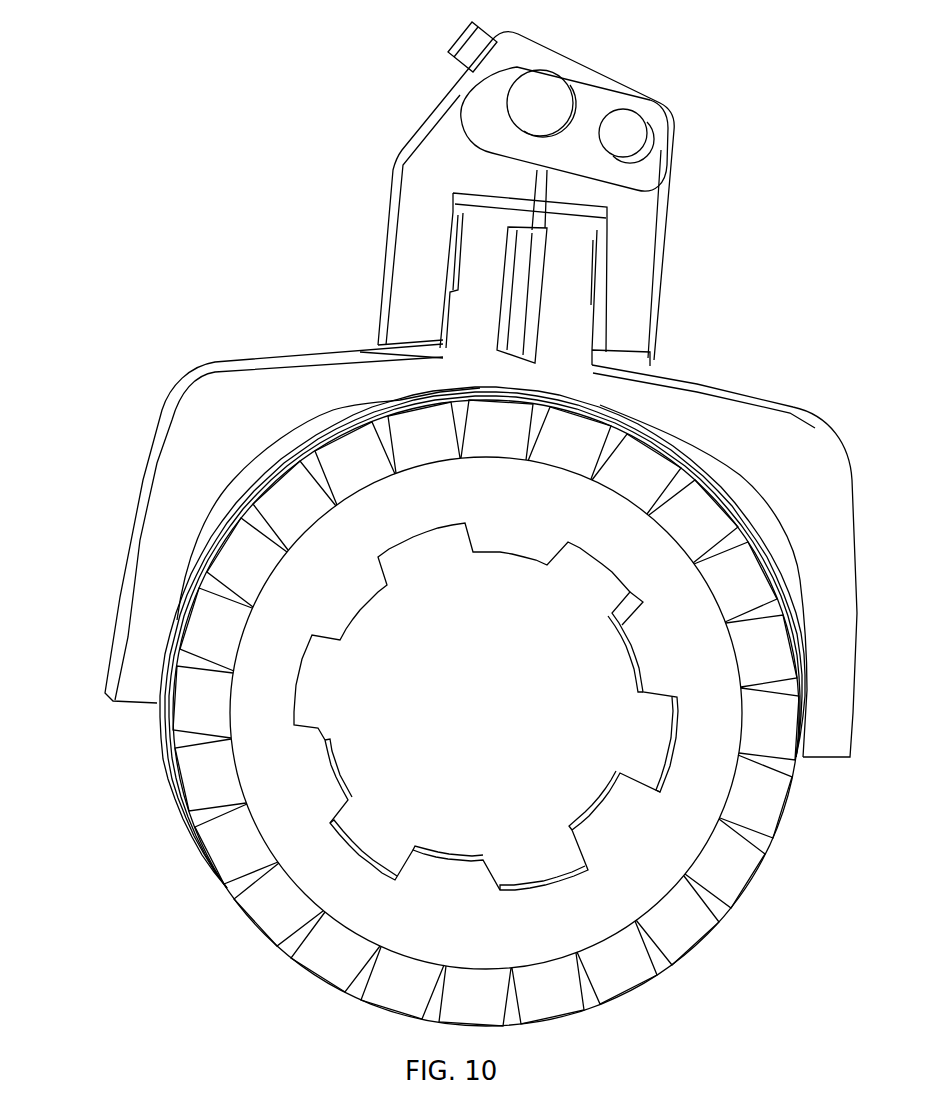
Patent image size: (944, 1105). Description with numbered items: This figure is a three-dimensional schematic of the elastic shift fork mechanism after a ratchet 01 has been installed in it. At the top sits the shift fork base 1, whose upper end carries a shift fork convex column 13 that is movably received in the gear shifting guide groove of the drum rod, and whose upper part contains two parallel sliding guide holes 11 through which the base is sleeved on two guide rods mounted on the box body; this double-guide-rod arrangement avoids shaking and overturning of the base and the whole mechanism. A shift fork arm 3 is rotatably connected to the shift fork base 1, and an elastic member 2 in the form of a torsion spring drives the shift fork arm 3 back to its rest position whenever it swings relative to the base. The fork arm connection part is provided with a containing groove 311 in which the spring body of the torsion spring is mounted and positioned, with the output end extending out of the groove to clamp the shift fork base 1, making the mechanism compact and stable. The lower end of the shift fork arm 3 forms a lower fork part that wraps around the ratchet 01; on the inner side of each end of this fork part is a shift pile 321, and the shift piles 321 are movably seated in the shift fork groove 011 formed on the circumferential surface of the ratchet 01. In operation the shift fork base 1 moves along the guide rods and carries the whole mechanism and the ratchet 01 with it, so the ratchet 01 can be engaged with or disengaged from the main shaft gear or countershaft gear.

The shift fork base 1 is at (450, 143).
The sliding guide holes 11 is at (620, 127).
The shift fork convex column 13 is at (467, 52).
The elastic member 2 is at (520, 333).
The shift fork arm 3 is at (230, 402).
The containing groove 311 is at (513, 267).
The shift fork groove 011 is at (180, 607).
The shift pile 321 is at (167, 687).
The ratchet 01 is at (738, 880).